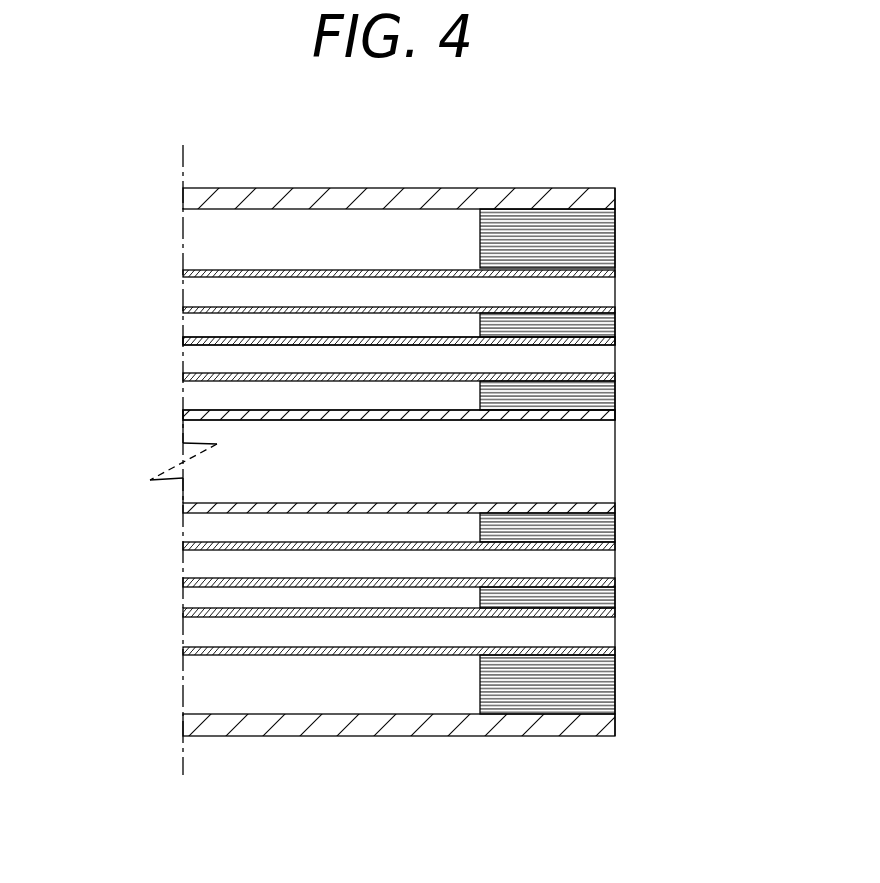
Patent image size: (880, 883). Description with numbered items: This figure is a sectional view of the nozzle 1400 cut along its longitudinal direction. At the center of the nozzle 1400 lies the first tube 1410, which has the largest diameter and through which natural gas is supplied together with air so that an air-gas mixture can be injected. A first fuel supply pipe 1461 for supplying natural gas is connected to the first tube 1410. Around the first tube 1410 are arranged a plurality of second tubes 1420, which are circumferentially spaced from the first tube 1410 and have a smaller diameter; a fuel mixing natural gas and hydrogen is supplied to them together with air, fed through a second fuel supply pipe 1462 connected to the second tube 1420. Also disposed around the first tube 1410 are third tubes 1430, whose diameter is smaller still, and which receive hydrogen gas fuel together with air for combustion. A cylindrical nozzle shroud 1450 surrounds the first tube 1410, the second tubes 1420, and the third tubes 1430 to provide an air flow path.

The nozzle 1400 is at (646, 187).
The nozzle shroud 1450 is at (368, 207).
The third tube 1430 is at (582, 238).
The second tube 1420 is at (535, 345).
The first tube 1410 is at (535, 413).
The second fuel supply pipe 1462 is at (237, 341).
The first fuel supply pipe 1461 is at (241, 414).